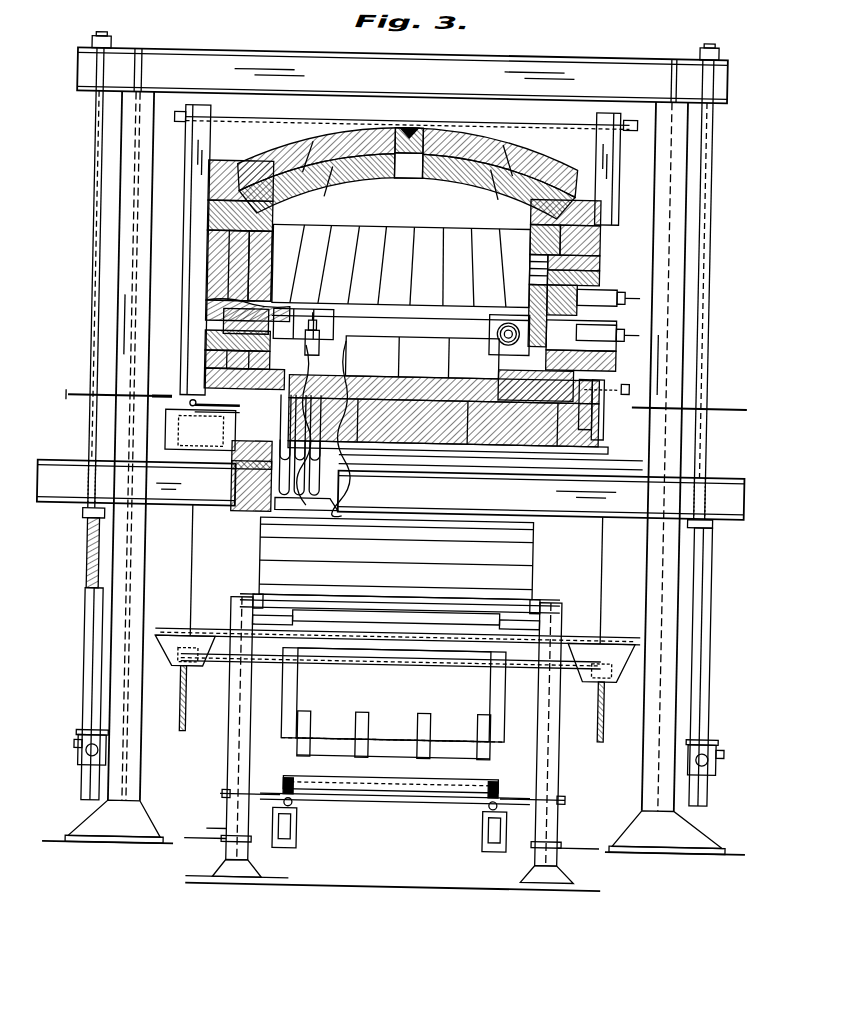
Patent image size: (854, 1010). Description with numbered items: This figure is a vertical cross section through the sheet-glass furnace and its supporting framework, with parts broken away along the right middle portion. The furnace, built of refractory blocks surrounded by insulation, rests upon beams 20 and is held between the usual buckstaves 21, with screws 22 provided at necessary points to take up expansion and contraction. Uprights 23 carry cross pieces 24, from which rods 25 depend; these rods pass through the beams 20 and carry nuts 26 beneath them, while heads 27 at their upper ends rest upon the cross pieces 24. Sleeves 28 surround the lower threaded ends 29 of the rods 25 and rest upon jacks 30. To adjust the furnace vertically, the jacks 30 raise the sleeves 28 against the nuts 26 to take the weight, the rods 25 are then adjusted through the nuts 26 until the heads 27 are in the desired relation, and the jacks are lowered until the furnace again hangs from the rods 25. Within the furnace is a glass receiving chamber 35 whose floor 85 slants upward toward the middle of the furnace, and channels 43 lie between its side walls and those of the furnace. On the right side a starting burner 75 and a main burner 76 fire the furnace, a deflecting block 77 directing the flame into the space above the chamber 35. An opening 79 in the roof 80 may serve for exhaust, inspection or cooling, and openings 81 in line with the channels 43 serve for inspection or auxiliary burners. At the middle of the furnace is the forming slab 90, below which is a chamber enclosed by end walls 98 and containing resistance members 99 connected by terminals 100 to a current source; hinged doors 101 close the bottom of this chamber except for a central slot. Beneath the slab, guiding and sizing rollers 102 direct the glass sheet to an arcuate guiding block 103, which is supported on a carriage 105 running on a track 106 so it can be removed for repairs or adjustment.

The beams 20 is at (88, 476).
The buckstaves 21 is at (194, 219).
The screws 22 is at (631, 386).
The uprights 23 is at (142, 755).
The cross pieces 24 is at (577, 70).
The rods 25 is at (91, 219).
The nuts 26 is at (88, 520).
The heads 27 is at (107, 48).
The sleeves 28 is at (90, 683).
The lower threaded ends 29 is at (91, 582).
The jacks 30 is at (87, 759).
The glass receiving chamber 35 is at (422, 346).
The channels 43 is at (520, 369).
The starting burner 75 is at (623, 288).
The main burner 76 is at (626, 330).
The deflecting block 77 is at (529, 300).
The opening 79 is at (408, 132).
The roof 80 is at (518, 162).
The openings 81 is at (496, 328).
The floor 85 is at (406, 390).
The forming slab 90 is at (324, 414).
The end walls 98 is at (254, 496).
The resistance members 99 is at (302, 427).
The terminals 100 is at (192, 404).
The hinged doors 101 is at (296, 513).
The guiding and sizing rollers 102 is at (446, 621).
The arcuate guiding block 103 is at (300, 703).
The carriage 105 is at (389, 782).
The track 106 is at (293, 790).